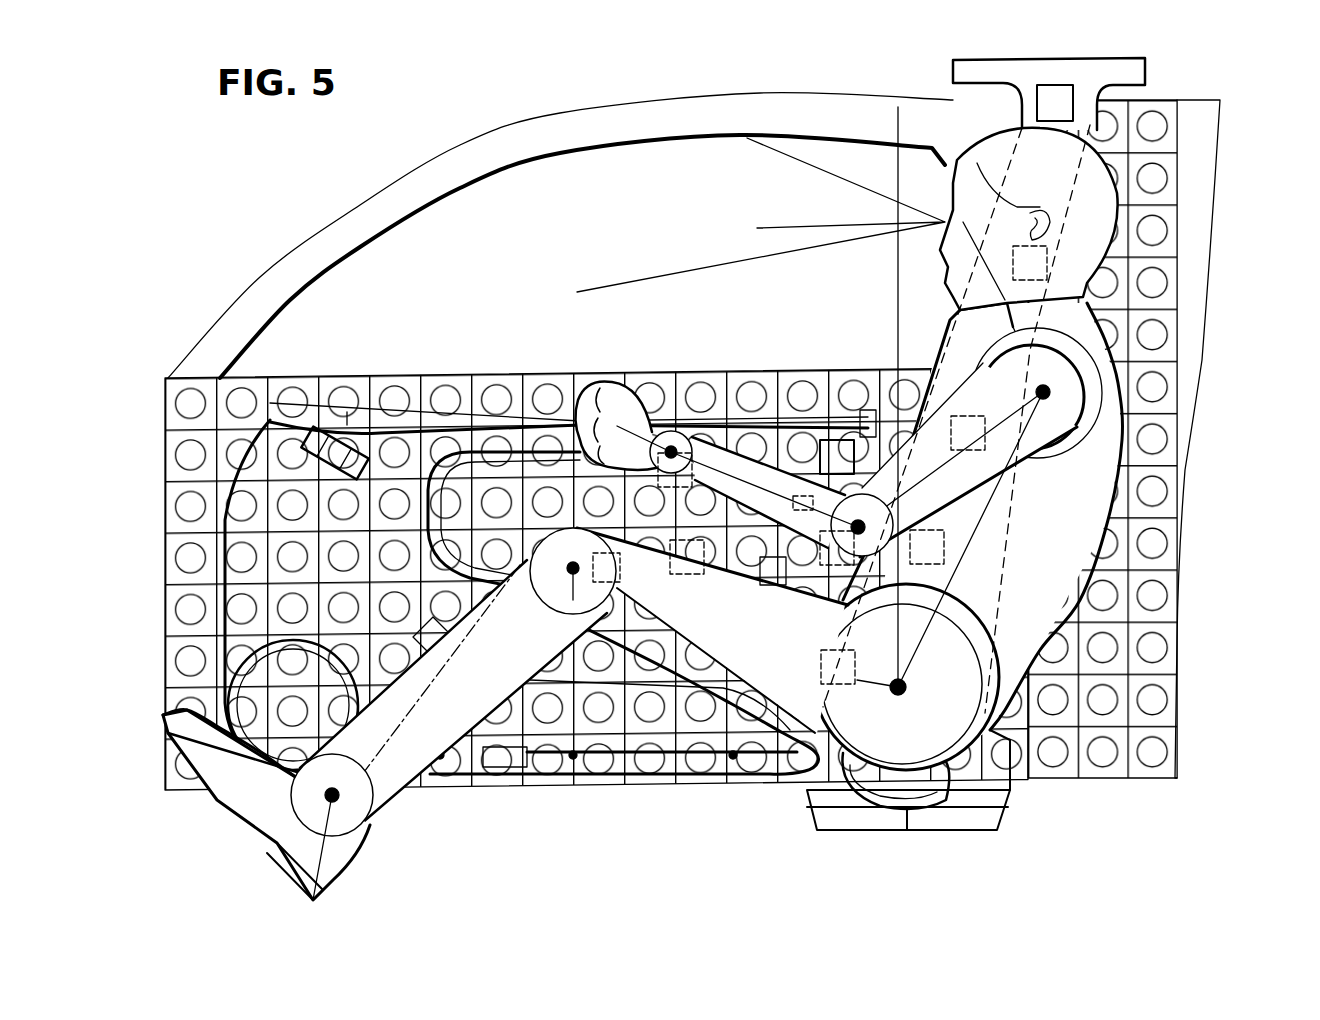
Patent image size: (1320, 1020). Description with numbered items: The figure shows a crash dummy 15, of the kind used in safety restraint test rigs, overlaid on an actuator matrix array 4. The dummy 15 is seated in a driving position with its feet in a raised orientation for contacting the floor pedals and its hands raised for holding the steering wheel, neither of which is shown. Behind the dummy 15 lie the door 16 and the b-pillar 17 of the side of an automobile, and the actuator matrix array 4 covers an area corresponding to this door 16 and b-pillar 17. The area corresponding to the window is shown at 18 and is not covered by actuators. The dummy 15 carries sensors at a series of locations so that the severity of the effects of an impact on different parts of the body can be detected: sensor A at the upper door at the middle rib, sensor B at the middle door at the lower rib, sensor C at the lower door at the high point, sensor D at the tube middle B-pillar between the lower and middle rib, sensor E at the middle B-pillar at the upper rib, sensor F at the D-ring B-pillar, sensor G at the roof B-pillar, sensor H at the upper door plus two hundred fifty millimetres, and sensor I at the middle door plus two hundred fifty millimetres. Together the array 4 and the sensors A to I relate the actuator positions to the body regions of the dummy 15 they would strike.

The actuator matrix array 4 is at (1176, 487).
The crash dummy 15 is at (1112, 440).
The door 16 is at (407, 375).
The b-pillar 17 is at (917, 310).
The window area 18 is at (590, 238).
The sensor A is at (837, 457).
The sensor B is at (837, 548).
The sensor C is at (838, 667).
The sensor D is at (927, 547).
The sensor E is at (968, 433).
The sensor F is at (1030, 263).
The sensor G is at (1055, 103).
The sensor H is at (675, 470).
The sensor I is at (687, 557).